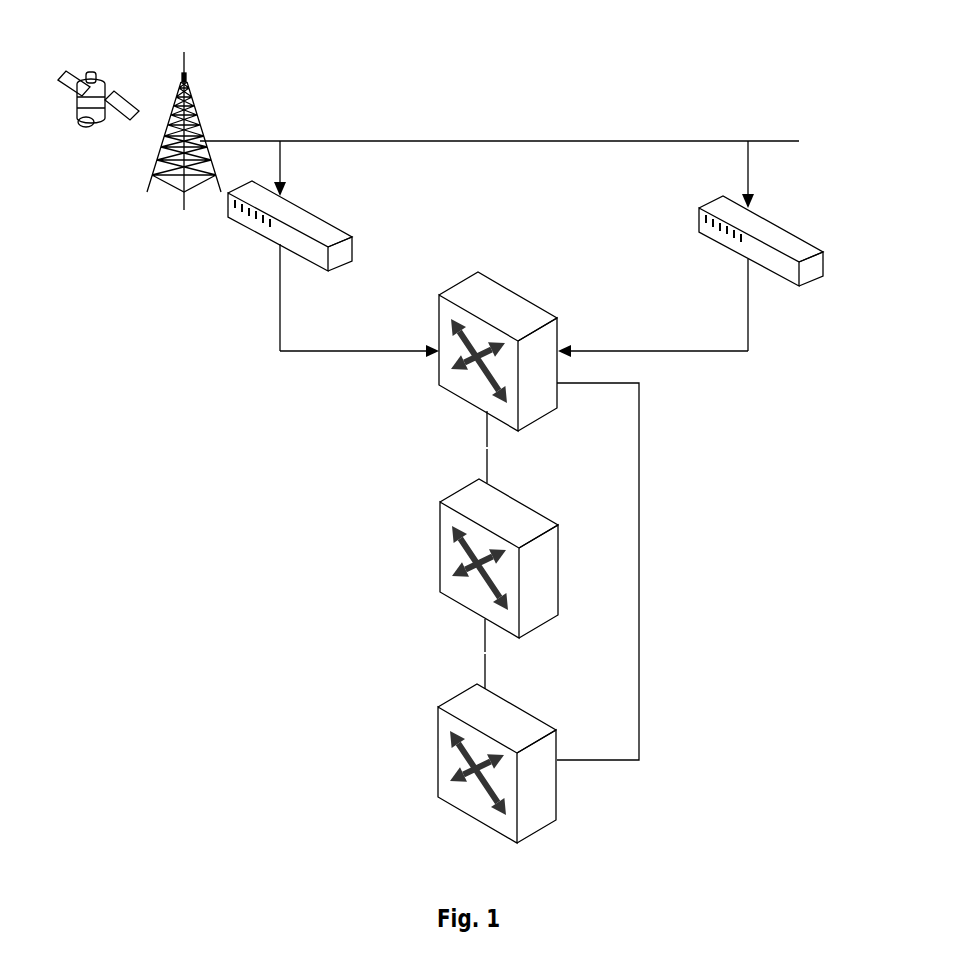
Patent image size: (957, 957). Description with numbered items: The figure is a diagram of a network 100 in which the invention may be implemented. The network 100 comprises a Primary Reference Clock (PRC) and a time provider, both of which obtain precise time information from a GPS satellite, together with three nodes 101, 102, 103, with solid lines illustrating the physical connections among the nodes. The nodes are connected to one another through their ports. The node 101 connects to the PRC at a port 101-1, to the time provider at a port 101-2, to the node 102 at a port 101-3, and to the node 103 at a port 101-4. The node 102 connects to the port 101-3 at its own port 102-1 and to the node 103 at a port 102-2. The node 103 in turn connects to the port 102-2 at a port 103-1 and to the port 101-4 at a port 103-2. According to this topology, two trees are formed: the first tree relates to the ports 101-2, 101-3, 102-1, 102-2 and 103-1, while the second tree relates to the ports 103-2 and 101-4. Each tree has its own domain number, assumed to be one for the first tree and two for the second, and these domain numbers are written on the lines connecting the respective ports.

The network 100 is at (768, 72).
The node 101 is at (498, 351).
The node 102 is at (499, 558).
The node 103 is at (497, 763).
The port 101-1 is at (359, 341).
The port 101-2 is at (653, 342).
The port 101-3 is at (466, 429).
The port 101-4 is at (604, 489).
The port 102-1 is at (463, 466).
The port 102-2 is at (464, 634).
The port 103-1 is at (461, 671).
The port 103-2 is at (598, 666).